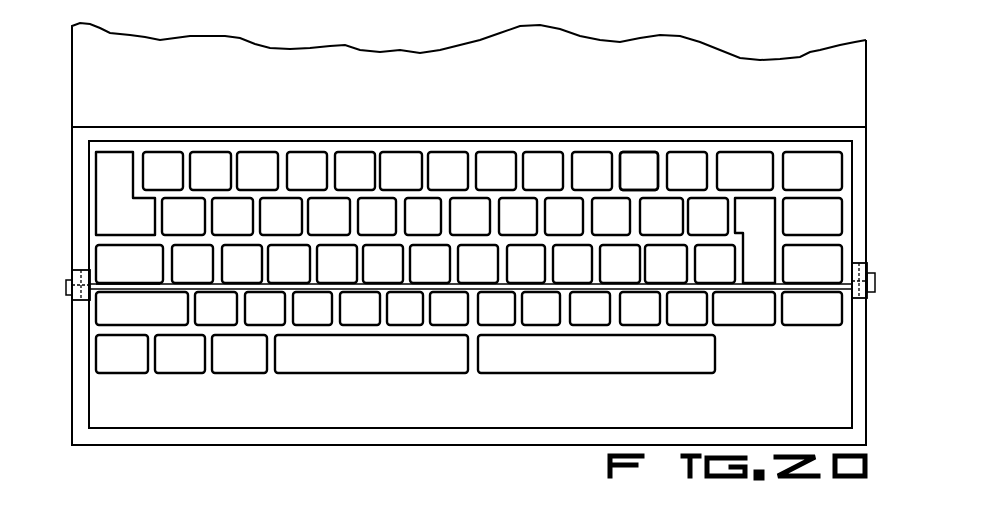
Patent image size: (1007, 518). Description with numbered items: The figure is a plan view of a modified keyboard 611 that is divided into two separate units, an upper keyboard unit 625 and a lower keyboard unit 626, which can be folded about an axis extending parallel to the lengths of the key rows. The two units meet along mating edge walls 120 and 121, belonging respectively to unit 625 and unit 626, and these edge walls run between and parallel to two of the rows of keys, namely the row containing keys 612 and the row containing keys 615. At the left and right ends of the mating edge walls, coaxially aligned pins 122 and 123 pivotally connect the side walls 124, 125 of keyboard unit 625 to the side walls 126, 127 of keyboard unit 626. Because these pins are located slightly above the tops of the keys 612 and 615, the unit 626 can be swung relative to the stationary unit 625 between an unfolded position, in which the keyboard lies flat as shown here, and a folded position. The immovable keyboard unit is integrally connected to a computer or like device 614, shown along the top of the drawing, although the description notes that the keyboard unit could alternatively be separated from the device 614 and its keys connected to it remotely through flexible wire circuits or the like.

The keyboard 611 is at (527, 126).
The keys 612 is at (634, 160).
The computer or like device 614 is at (799, 43).
The keys 615 is at (810, 160).
The mating edge wall 120 is at (105, 290).
The mating edge wall 121 is at (120, 284).
The pin 122 is at (870, 284).
The pin 123 is at (68, 288).
The side wall 124 is at (862, 186).
The side wall 125 is at (77, 229).
The side wall 126 is at (860, 401).
The side wall 127 is at (75, 392).
The keyboard unit 625 is at (896, 228).
The keyboard unit 626 is at (893, 346).